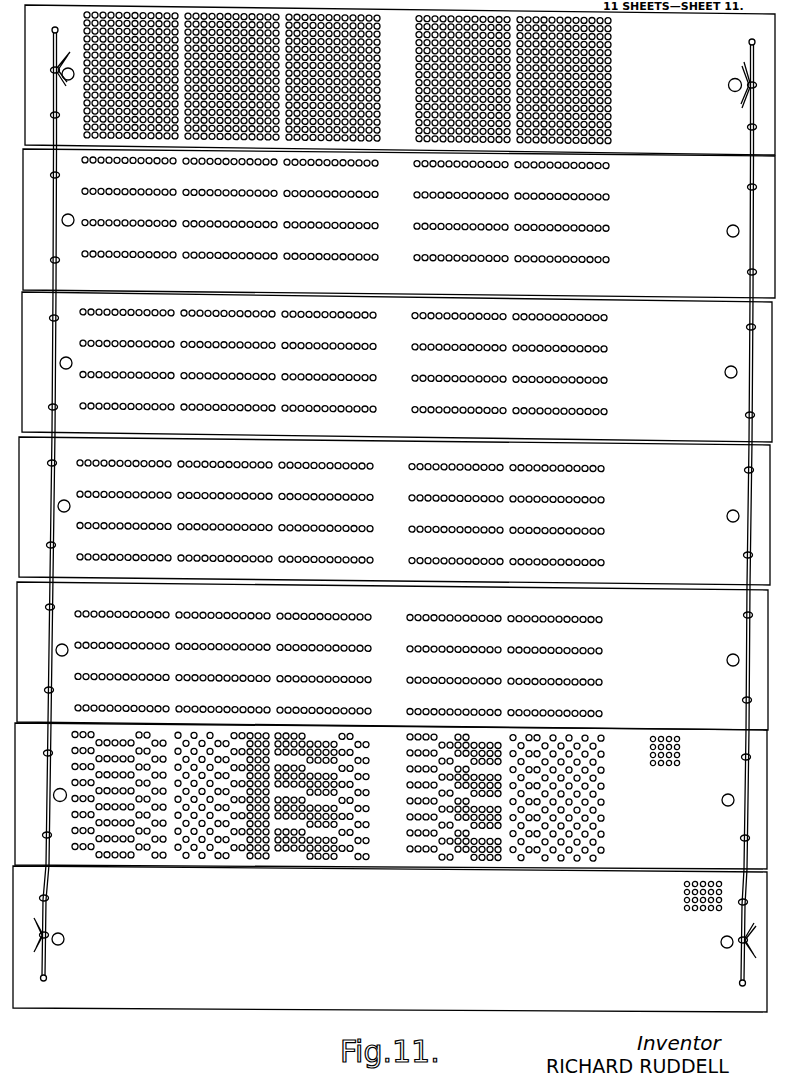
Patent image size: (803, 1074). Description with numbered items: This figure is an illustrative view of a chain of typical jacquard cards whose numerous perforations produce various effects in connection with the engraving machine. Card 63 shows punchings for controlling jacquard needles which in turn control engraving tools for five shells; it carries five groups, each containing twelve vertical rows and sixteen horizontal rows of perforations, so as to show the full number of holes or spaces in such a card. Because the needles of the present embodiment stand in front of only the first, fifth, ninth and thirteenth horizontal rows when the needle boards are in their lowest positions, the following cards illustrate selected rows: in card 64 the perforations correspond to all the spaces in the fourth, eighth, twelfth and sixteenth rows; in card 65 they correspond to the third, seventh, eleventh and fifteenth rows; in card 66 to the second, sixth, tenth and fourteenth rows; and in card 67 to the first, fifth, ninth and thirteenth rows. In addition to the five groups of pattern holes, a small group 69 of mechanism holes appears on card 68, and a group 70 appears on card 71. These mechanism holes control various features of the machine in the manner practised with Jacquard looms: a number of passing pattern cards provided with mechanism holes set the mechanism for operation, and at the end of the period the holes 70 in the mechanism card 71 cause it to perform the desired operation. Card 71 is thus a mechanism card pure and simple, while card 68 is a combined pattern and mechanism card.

The card 63 is at (400, 80).
The card 64 is at (399, 223).
The card 65 is at (397, 367).
The card 66 is at (394, 511).
The card 67 is at (392, 656).
The card 68 is at (391, 796).
The small group 69 is at (693, 757).
The group 70 is at (683, 912).
The mechanism card 71 is at (390, 939).